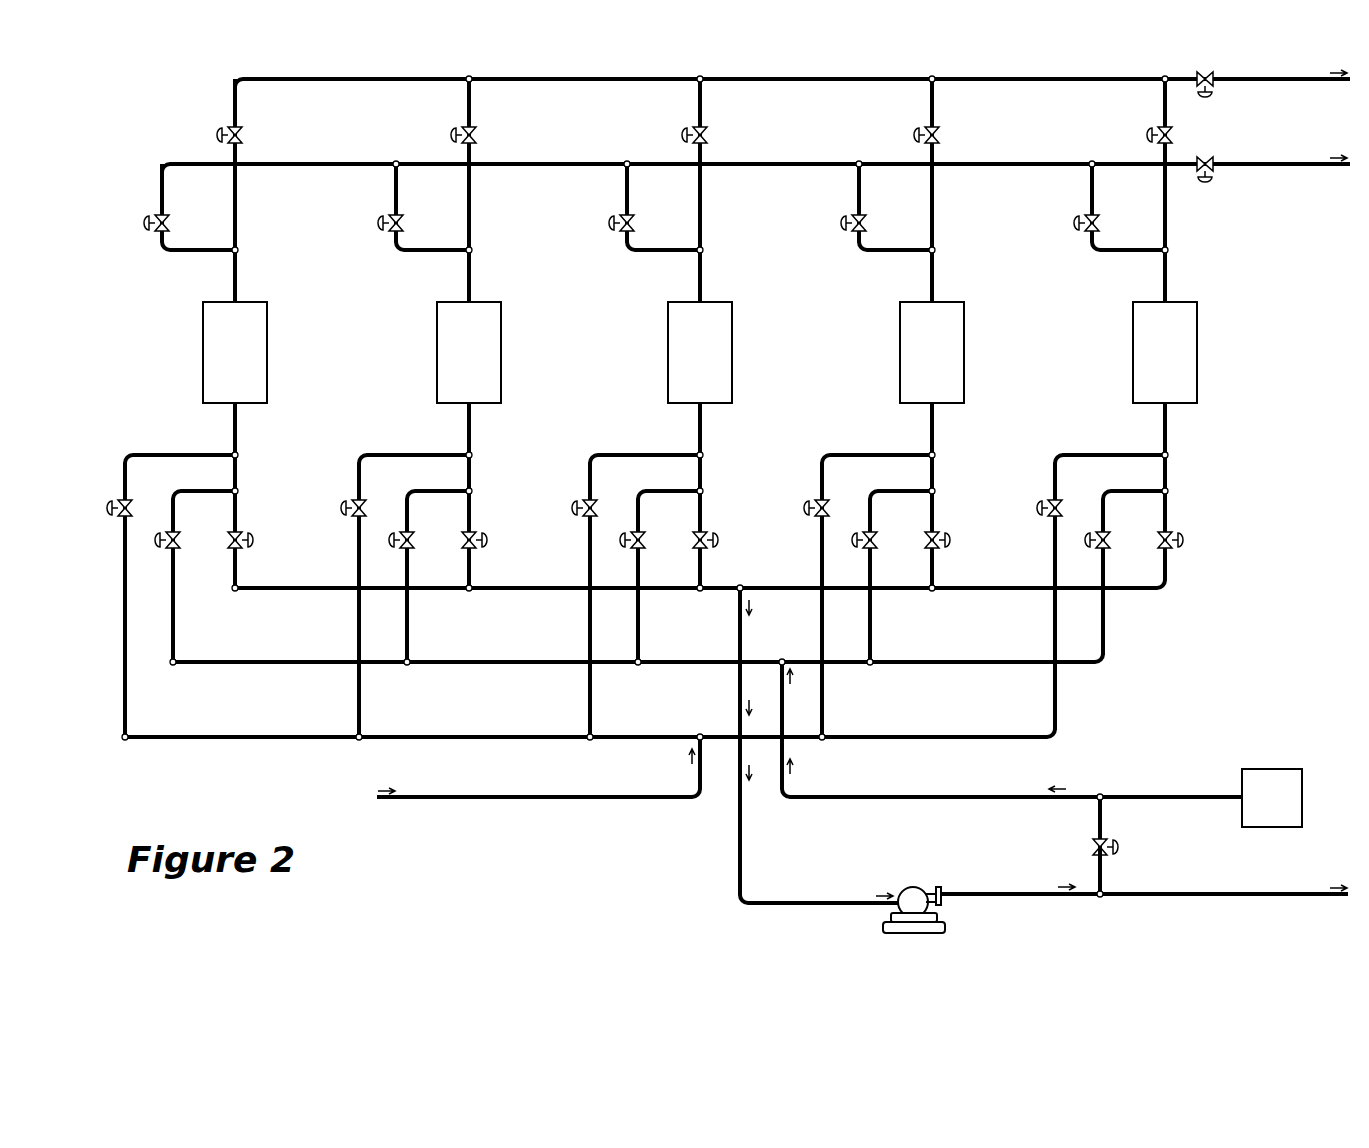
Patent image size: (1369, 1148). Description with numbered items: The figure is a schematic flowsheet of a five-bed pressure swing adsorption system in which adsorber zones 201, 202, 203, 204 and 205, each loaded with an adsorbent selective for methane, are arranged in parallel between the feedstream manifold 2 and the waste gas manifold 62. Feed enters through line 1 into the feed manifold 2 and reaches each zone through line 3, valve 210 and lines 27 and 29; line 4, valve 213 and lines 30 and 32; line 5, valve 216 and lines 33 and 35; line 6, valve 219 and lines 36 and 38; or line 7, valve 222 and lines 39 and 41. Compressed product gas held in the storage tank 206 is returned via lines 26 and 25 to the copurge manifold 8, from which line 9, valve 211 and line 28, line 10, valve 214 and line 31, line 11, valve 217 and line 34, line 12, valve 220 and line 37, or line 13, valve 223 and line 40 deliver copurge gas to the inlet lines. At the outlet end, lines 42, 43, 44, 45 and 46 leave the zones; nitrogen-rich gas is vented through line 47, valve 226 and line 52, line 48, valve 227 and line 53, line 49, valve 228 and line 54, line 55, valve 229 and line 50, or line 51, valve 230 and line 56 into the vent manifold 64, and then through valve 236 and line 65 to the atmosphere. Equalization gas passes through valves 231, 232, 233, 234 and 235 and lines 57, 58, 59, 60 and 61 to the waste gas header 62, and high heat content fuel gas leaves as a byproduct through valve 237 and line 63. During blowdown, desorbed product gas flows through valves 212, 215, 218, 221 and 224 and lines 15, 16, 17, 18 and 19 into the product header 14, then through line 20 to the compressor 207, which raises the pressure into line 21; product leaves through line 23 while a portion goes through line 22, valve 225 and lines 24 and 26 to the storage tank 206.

The line 1 is at (512, 797).
The feedstream manifold 2 is at (290, 739).
The line 3 is at (127, 705).
The line 4 is at (361, 707).
The line 5 is at (592, 707).
The line 6 is at (825, 707).
The line 7 is at (1058, 707).
The copurge manifold 8 is at (290, 664).
The line 9 is at (175, 630).
The line 10 is at (410, 635).
The line 11 is at (641, 635).
The line 12 is at (873, 635).
The line 13 is at (1106, 635).
The product header 14 is at (290, 590).
The line 15 is at (240, 573).
The line 16 is at (474, 573).
The line 17 is at (705, 573).
The line 18 is at (937, 573).
The line 19 is at (1170, 573).
The line 20 is at (745, 635).
The line 21 is at (1046, 892).
The line 22 is at (1108, 890).
The line 23 is at (1254, 892).
The line 24 is at (1096, 822).
The line 25 is at (908, 797).
The line 26 is at (1162, 797).
The line 27 is at (195, 452).
The line 28 is at (203, 490).
The line 29 is at (240, 476).
The line 30 is at (428, 452).
The line 31 is at (436, 490).
The line 32 is at (474, 476).
The line 33 is at (658, 452).
The line 34 is at (667, 490).
The line 35 is at (705, 476).
The line 36 is at (888, 452).
The line 37 is at (898, 490).
The line 38 is at (937, 476).
The line 39 is at (1095, 452).
The line 40 is at (1131, 490).
The line 41 is at (1170, 476).
The line 42 is at (240, 278).
The line 43 is at (474, 278).
The line 44 is at (705, 278).
The line 45 is at (937, 278).
The line 46 is at (1170, 278).
The line 47 is at (196, 258).
The line 48 is at (428, 258).
The line 49 is at (660, 258).
The line 50 is at (892, 258).
The line 51 is at (1124, 258).
The line 52 is at (158, 192).
The line 53 is at (392, 192).
The line 54 is at (624, 192).
The line 55 is at (856, 192).
The line 56 is at (1088, 192).
The line 57 is at (232, 108).
The line 58 is at (466, 110).
The line 59 is at (697, 110).
The line 60 is at (929, 110).
The line 61 is at (1162, 110).
The waste gas manifold 62 is at (808, 82).
The line 63 is at (1305, 82).
The vent manifold 64 is at (835, 162).
The line 65 is at (1300, 166).
The adsorber zone 201 is at (268, 368).
The adsorber zone 202 is at (502, 368).
The adsorber zone 203 is at (733, 368).
The adsorber zone 204 is at (965, 368).
The adsorber zone 205 is at (1198, 368).
The storage tank 206 is at (1267, 768).
The compressor 207 is at (905, 895).
The valve 210 is at (116, 500).
The valve 211 is at (176, 530).
The valve 212 is at (250, 536).
The valve 213 is at (350, 500).
The valve 214 is at (410, 530).
The valve 215 is at (484, 536).
The valve 216 is at (582, 500).
The valve 217 is at (642, 530).
The valve 218 is at (716, 536).
The valve 219 is at (814, 500).
The valve 220 is at (874, 530).
The valve 221 is at (948, 536).
The valve 222 is at (1047, 500).
The valve 223 is at (1106, 530).
The valve 224 is at (1182, 536).
The valve 225 is at (1118, 852).
The valve 226 is at (158, 232).
The valve 227 is at (392, 232).
The valve 228 is at (623, 232).
The valve 229 is at (855, 232).
The valve 230 is at (1088, 232).
The valve 231 is at (220, 130).
The valve 232 is at (455, 130).
The valve 233 is at (686, 130).
The valve 234 is at (918, 130).
The valve 235 is at (1150, 130).
The valve 236 is at (1212, 180).
The valve 237 is at (1212, 93).